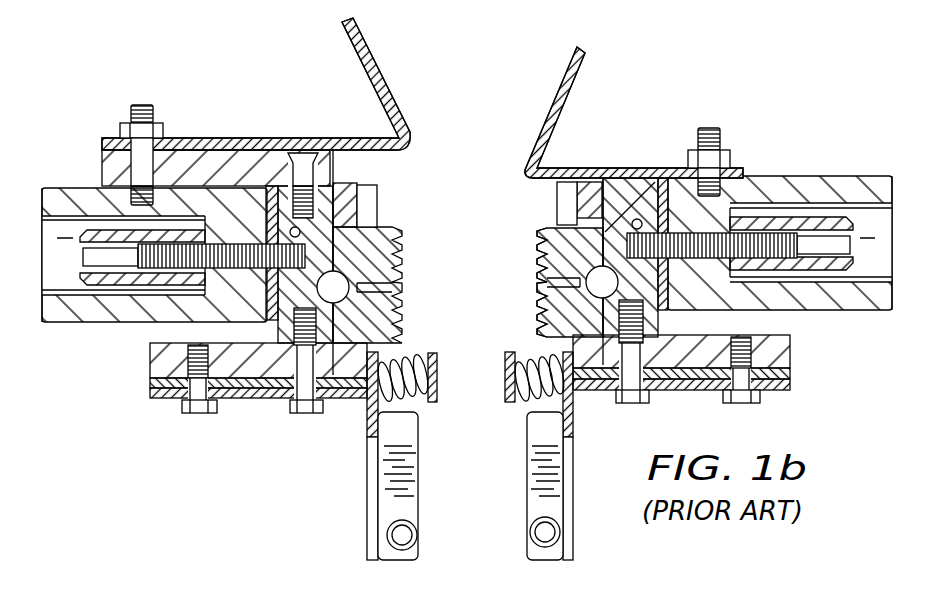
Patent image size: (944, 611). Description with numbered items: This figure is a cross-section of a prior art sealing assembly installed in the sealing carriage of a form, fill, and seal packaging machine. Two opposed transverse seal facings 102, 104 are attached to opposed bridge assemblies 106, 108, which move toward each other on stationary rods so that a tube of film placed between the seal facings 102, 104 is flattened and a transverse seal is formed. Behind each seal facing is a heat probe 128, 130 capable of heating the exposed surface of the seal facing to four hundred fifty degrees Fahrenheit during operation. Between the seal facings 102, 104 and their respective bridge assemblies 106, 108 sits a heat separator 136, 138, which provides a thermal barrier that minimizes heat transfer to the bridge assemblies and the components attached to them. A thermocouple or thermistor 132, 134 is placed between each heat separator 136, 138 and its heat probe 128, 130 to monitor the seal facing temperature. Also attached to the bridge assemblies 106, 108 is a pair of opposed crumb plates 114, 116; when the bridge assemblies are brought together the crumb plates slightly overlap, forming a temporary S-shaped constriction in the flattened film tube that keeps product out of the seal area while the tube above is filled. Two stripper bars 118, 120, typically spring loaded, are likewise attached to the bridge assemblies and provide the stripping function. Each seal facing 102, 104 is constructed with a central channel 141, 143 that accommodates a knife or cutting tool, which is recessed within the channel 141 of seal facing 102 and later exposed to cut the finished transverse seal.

The transverse seal facing 102 is at (396, 238).
The transverse seal facing 104 is at (537, 253).
The bridge assembly 106 is at (70, 187).
The bridge assembly 108 is at (813, 175).
The crumb plate 114 is at (382, 67).
The crumb plate 116 is at (545, 108).
The stripper bar 118 is at (437, 401).
The stripper bar 120 is at (505, 362).
The heat probe 128 is at (399, 271).
The heat probe 130 is at (542, 303).
The thermocouple or thermistor 132 is at (287, 165).
The thermocouple or thermistor 134 is at (637, 219).
The heat separator 136 is at (280, 290).
The heat separator 138 is at (677, 193).
The central channel 141 is at (402, 288).
The central channel 143 is at (537, 282).